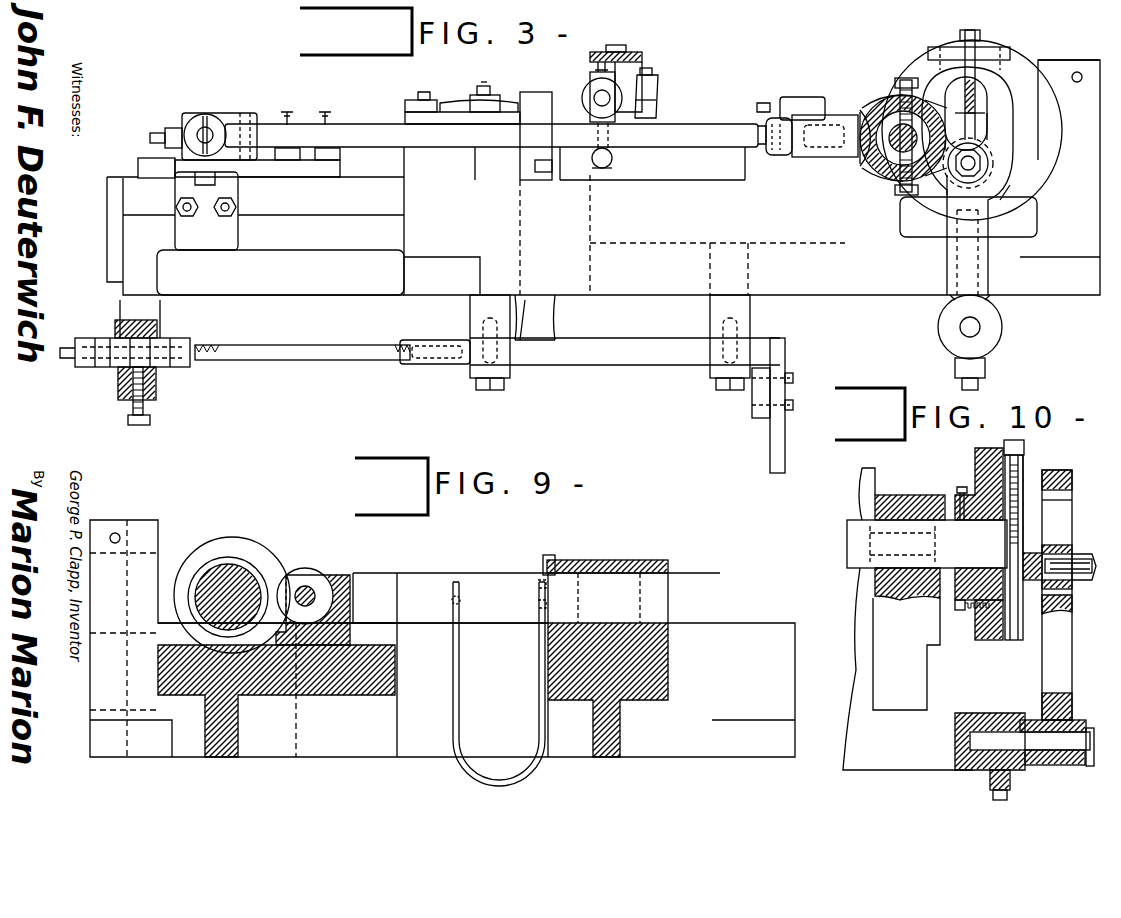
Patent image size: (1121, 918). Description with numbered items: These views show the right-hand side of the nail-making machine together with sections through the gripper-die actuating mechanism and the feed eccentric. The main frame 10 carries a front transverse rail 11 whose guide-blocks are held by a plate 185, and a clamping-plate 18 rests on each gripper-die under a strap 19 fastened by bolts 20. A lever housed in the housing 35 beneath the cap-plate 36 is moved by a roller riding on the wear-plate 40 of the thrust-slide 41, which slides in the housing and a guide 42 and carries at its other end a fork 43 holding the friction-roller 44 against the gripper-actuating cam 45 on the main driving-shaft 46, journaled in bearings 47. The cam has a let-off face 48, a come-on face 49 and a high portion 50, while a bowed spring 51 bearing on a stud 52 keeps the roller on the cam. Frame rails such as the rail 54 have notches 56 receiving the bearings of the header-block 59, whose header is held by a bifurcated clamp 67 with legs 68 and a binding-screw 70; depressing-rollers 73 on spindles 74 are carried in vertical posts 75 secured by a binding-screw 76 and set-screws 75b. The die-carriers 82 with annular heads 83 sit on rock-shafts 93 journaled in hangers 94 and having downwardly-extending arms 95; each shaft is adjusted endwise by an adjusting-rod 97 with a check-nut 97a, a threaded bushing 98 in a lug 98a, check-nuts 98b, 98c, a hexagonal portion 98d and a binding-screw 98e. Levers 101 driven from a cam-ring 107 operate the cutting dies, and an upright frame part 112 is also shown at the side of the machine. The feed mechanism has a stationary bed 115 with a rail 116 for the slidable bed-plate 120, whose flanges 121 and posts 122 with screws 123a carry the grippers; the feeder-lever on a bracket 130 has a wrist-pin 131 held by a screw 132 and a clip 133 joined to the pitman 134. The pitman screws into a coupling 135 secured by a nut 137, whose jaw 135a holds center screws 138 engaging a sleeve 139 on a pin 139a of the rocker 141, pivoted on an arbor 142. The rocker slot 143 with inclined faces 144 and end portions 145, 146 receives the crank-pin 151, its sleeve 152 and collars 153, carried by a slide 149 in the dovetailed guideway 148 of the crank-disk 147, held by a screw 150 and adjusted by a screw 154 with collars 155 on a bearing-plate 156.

In FIG. 3, the main frame 10 is at (848, 300).
In FIG. 9, the main frame 10 is at (414, 760).
In FIG. 10, the main frame 10 is at (858, 650).
In FIG. 3, the front transverse rail 11 is at (410, 160).
In FIG. 3, the clamping-plate 18 is at (452, 108).
In FIG. 3, the strap 19 is at (490, 96).
In FIG. 3, the bolts 20 is at (480, 88).
In FIG. 9, the housing 35 is at (668, 573).
In FIG. 9, the cap-plate 36 is at (600, 562).
In FIG. 9, the wear-plate 40 is at (647, 565).
In FIG. 9, the thrust-slide 41 is at (483, 571).
In FIG. 9, the guide 42 is at (540, 576).
In FIG. 9, the fork 43 is at (336, 572).
In FIG. 9, the friction-roller 44 is at (306, 574).
In FIG. 9, the gripper-actuating cam 45 is at (232, 562).
In FIG. 9, the main driving-shaft 46 is at (206, 585).
In FIG. 10, the main driving-shaft 46 is at (858, 546).
In FIG. 10, the bearings 47 is at (896, 494).
In FIG. 9, the let-off face 48 is at (211, 556).
In FIG. 9, the come-on face 49 is at (228, 650).
In FIG. 9, the high cam portion 50 is at (272, 566).
In FIG. 9, the spring 51 is at (462, 700).
In FIG. 9, the stud 52 is at (452, 604).
In FIG. 3, the rail 54 is at (672, 168).
In FIG. 3, the longitudinal notches 56 is at (822, 157).
In FIG. 3, the header-block 59 is at (786, 102).
In FIG. 3, the bifurcated clamp 67 is at (650, 92).
In FIG. 3, the legs 68 is at (650, 112).
In FIG. 3, the binding-screw 70 is at (652, 70).
In FIG. 3, the depressing-rollers 73 is at (590, 88).
In FIG. 3, the horizontal spindles 74 is at (596, 100).
In FIG. 3, the vertical posts 75 is at (592, 98).
In FIG. 3, the set-screws 75b is at (606, 168).
In FIG. 3, the binding-screw 76 is at (597, 62).
In FIG. 3, the die-carriers 82 is at (540, 315).
In FIG. 3, the annular head 83 is at (538, 96).
In FIG. 3, the rock-shafts 93 is at (590, 366).
In FIG. 3, the hangers 94 is at (472, 316).
In FIG. 3, the downwardly-extending arms 95 is at (786, 440).
In FIG. 3, the adjusting-rod 97 is at (292, 352).
In FIG. 3, the check-nut 97a is at (403, 364).
In FIG. 3, the threaded bushing 98 is at (172, 340).
In FIG. 3, the lug 98a is at (122, 300).
In FIG. 3, the check-nut 98b is at (192, 346).
In FIG. 3, the check-nut 98c is at (96, 366).
In FIG. 3, the hexagonal portion 98d is at (110, 368).
In FIG. 3, the binding-screw 98e is at (148, 420).
In FIG. 3, the levers 101 is at (632, 70).
In FIG. 9, the cam-ring 107 is at (168, 580).
In FIG. 3, the upright 112 is at (1086, 66).
In FIG. 9, the upright 112 is at (108, 528).
In FIG. 3, the stationary bed 115 is at (334, 244).
In FIG. 3, the rail 116 is at (298, 208).
In FIG. 3, the slidable bed-plate 120 is at (148, 157).
In FIG. 3, the parallel flanges 121 is at (148, 166).
In FIG. 3, the posts 122 is at (282, 112).
In FIG. 3, the screw 123a is at (322, 112).
In FIG. 3, the offstanding bracket 130 is at (208, 230).
In FIG. 3, the wrist-pin 131 is at (201, 122).
In FIG. 3, the screw 132 is at (166, 130).
In FIG. 3, the clip 133 is at (232, 114).
In FIG. 3, the pitman 134 is at (460, 142).
In FIG. 3, the coupling 135 is at (802, 164).
In FIG. 3, the jaw 135a is at (856, 230).
In FIG. 3, the nut 137 is at (774, 156).
In FIG. 3, the center screws 138 is at (902, 80).
In FIG. 3, the sleeve 139 is at (858, 162).
In FIG. 3, the pin 139a is at (878, 100).
In FIG. 3, the rocker 141 is at (946, 268).
In FIG. 10, the rocker 141 is at (1046, 676).
In FIG. 3, the arbor 142 is at (976, 324).
In FIG. 10, the arbor 142 is at (1044, 748).
In FIG. 3, the longitudinal slot 143 is at (988, 122).
In FIG. 10, the longitudinal slot 143 is at (1066, 504).
In FIG. 3, the inclined faces 144 is at (992, 150).
In FIG. 3, the end portion of rocker 145 is at (962, 44).
In FIG. 10, the end portion of rocker 145 is at (1072, 482).
In FIG. 3, the end portion of rocker 146 is at (1036, 203).
In FIG. 10, the end portion of rocker 146 is at (1062, 602).
In FIG. 3, the crank-disk 147 is at (1052, 170).
In FIG. 10, the crank-disk 147 is at (982, 458).
In FIG. 3, the dovetailed guideway 148 is at (975, 105).
In FIG. 10, the dovetailed guideway 148 is at (1010, 640).
In FIG. 3, the slide 149 is at (972, 138).
In FIG. 10, the slide 149 is at (1026, 616).
In FIG. 10, the screw 150 is at (975, 630).
In FIG. 3, the crank-pin 151 is at (982, 172).
In FIG. 10, the crank-pin 151 is at (1076, 580).
In FIG. 3, the sleeve 152 is at (988, 164).
In FIG. 10, the sleeve 152 is at (1056, 548).
In FIG. 3, the collars 153 is at (944, 176).
In FIG. 10, the collars 153 is at (1062, 560).
In FIG. 3, the adjusting screw 154 is at (1020, 72).
In FIG. 10, the adjusting screw 154 is at (1026, 490).
In FIG. 3, the collars 155 is at (986, 48).
In FIG. 10, the collars 155 is at (976, 478).
In FIG. 3, the bearing-plate 156 is at (762, 144).
In FIG. 10, the bearing-plate 156 is at (1024, 462).
In FIG. 3, the plate 185 is at (412, 108).